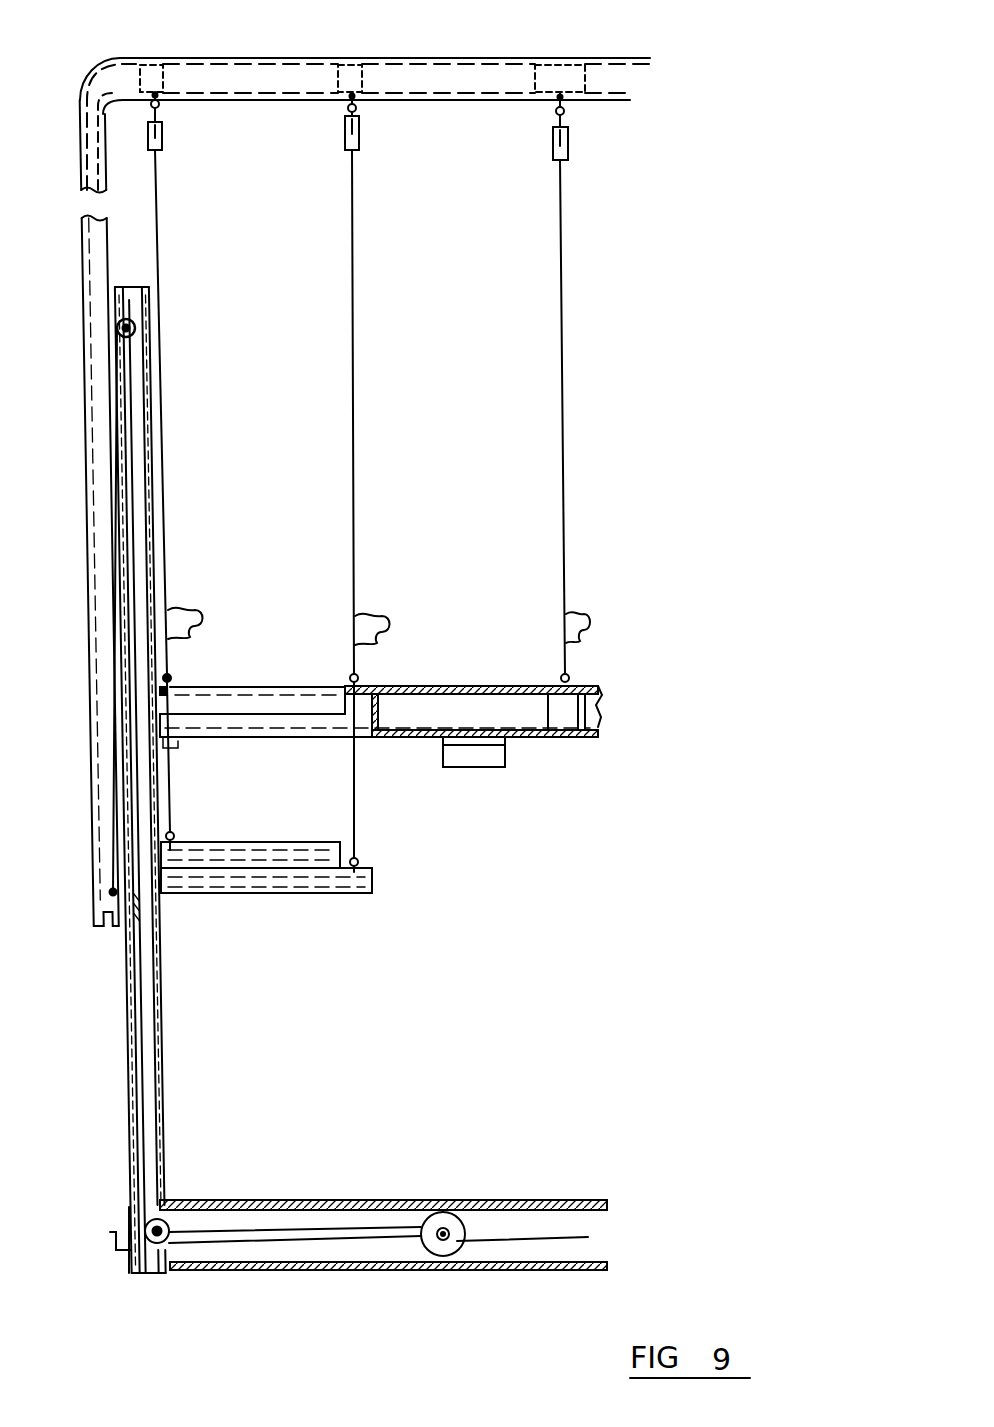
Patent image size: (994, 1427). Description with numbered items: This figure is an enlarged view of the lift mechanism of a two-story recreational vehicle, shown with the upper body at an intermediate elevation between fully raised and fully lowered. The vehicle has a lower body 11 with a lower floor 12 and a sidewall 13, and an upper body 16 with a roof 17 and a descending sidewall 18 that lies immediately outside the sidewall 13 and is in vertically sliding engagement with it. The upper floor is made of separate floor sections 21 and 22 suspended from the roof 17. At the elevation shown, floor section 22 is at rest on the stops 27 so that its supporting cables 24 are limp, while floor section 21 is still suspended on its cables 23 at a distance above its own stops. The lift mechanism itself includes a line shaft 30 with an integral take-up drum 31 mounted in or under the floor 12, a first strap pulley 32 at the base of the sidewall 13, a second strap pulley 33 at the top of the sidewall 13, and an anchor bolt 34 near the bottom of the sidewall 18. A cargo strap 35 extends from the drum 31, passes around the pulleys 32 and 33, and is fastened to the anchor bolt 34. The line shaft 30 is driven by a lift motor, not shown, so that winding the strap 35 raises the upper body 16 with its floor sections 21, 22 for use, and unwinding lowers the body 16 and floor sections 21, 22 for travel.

The lower body 11 is at (130, 1270).
The lower floor 12 is at (318, 1200).
The sidewall 13 is at (128, 1055).
The upper body 16 is at (118, 58).
The roof 17 is at (267, 56).
The sidewall 18 is at (88, 678).
The floor section 21 is at (257, 893).
The floor section 22 is at (447, 685).
The suspension cables 23 is at (352, 630).
The supporting cables 24 is at (569, 527).
The stops 27 is at (507, 758).
The line shaft 30 is at (440, 1245).
The take-up drum 31 is at (458, 1212).
The first strap pulley 32 is at (167, 1221).
The second strap pulley 33 is at (117, 328).
The anchor bolt 34 is at (113, 892).
The cargo strap 35 is at (113, 602).